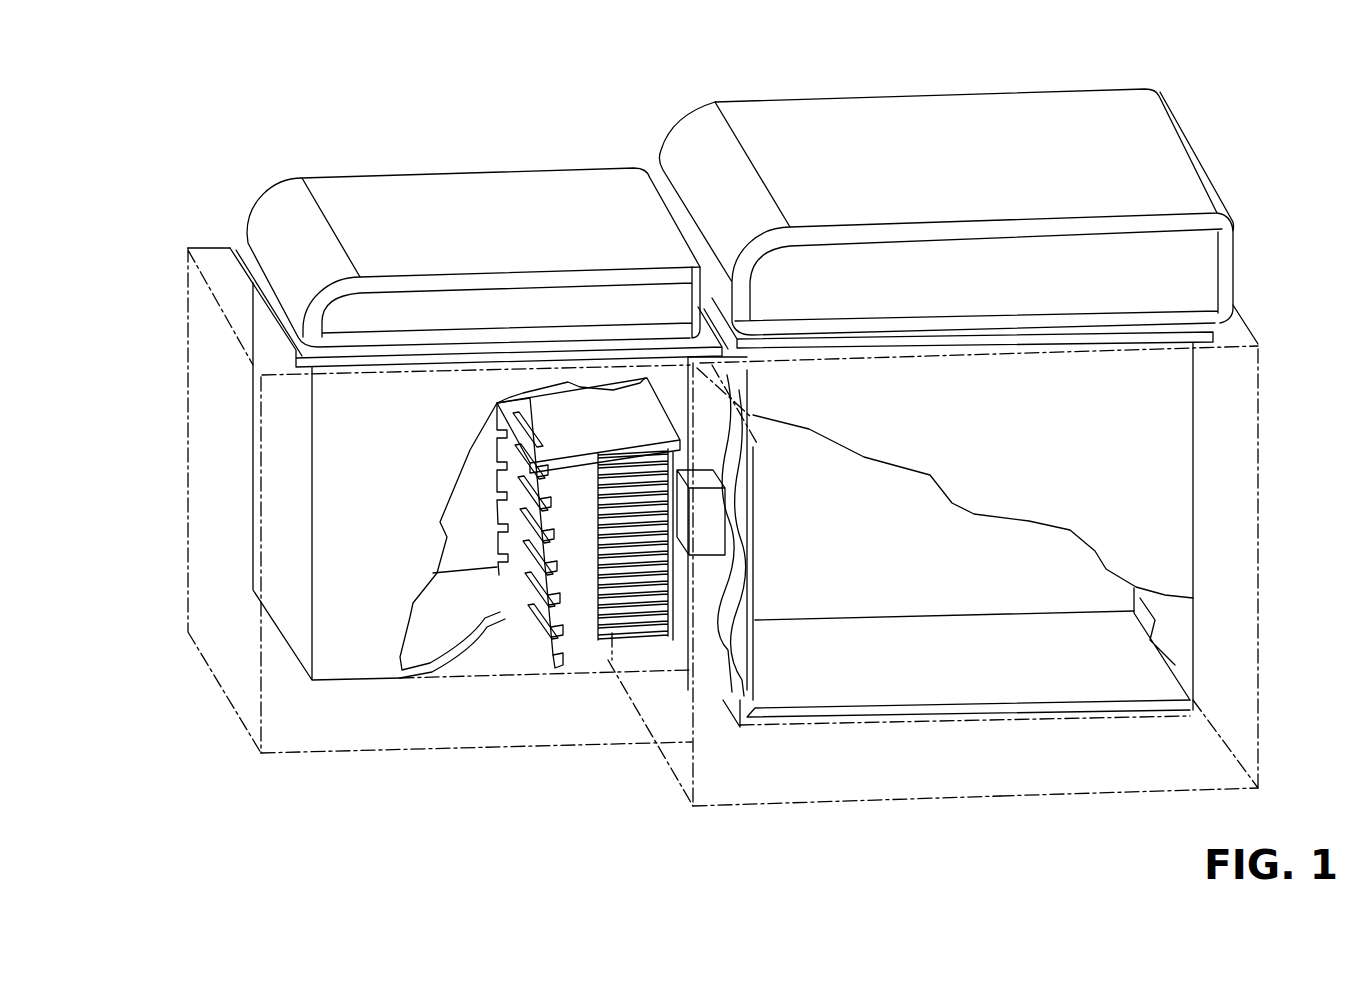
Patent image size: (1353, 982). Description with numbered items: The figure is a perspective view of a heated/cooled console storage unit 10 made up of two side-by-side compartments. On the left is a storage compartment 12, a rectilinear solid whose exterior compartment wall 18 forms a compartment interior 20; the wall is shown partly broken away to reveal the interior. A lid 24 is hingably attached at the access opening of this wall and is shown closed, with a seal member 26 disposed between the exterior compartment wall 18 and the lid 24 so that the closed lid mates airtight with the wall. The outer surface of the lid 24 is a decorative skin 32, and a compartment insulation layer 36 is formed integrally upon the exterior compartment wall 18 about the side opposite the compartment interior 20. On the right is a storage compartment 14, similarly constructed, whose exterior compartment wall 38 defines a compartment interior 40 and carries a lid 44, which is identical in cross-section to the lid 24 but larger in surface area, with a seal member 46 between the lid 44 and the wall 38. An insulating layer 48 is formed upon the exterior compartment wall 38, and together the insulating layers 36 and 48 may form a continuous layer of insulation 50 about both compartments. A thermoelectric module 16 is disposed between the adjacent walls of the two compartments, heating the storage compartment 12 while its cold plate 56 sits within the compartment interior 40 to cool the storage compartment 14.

The heated/cooled console storage unit 10 is at (211, 70).
The storage compartment 12 is at (252, 590).
The storage compartment 14 is at (1208, 437).
The thermoelectric module 16 is at (526, 644).
The exterior compartment wall 18 is at (345, 640).
The compartment interior 20 is at (436, 615).
The lid 24 is at (434, 228).
The seal member 26 is at (300, 364).
The decorative skin 32 is at (447, 190).
The compartment insulation layer 36 is at (580, 715).
The exterior compartment wall 38 is at (1197, 535).
The compartment interior 40 is at (1100, 592).
The lid 44 is at (1152, 113).
The seal member 46 is at (1195, 327).
The insulating layer 48 is at (997, 775).
The continuous layer of insulation 50 is at (1076, 797).
The cold plate 56 is at (1110, 670).